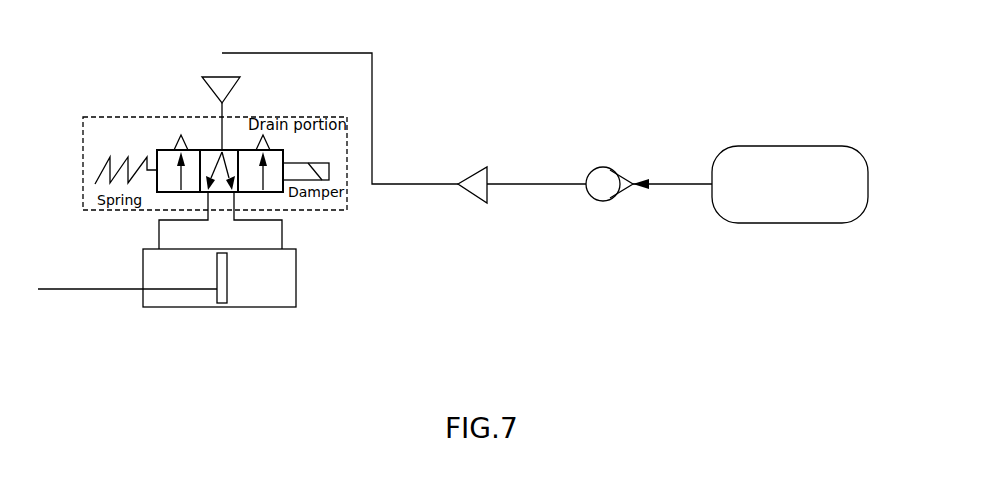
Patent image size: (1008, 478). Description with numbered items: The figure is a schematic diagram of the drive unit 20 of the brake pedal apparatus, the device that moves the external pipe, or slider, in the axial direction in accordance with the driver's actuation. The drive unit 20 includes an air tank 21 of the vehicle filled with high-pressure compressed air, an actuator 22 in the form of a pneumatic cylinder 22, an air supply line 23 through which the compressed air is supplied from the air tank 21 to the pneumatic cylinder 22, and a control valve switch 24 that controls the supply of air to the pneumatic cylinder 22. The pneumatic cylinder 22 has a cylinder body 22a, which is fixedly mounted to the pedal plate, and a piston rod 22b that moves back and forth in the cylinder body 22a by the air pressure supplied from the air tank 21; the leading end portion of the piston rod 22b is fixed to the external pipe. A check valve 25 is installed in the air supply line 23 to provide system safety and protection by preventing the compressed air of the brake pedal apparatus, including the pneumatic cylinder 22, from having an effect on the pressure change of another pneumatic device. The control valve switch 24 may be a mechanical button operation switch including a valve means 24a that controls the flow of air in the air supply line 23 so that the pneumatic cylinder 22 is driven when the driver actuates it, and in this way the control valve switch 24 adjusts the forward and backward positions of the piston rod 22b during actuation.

The drive unit 20 is at (440, 148).
The air tank 21 is at (793, 223).
The pneumatic cylinder 22 is at (170, 320).
The cylinder body 22a is at (175, 307).
The piston rod 22b is at (77, 289).
The air supply line 23 is at (420, 184).
The control valve switch 24 is at (159, 130).
The valve means 24a is at (273, 192).
The check valve 25 is at (605, 202).